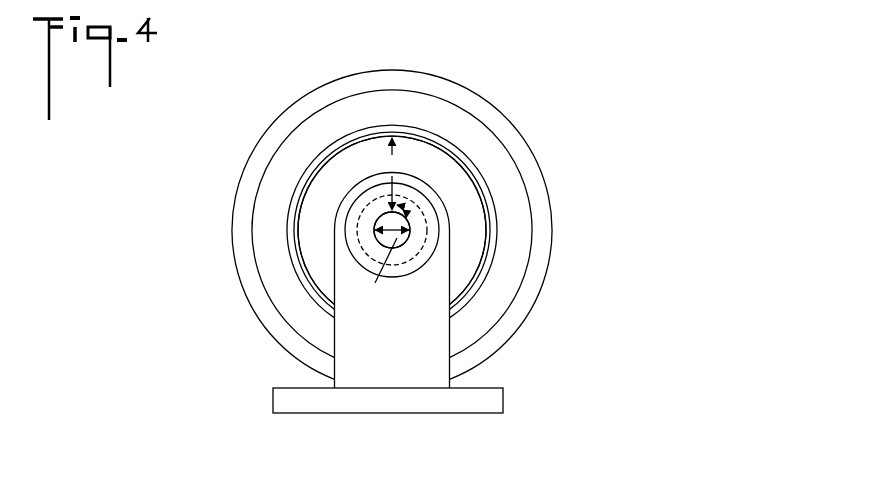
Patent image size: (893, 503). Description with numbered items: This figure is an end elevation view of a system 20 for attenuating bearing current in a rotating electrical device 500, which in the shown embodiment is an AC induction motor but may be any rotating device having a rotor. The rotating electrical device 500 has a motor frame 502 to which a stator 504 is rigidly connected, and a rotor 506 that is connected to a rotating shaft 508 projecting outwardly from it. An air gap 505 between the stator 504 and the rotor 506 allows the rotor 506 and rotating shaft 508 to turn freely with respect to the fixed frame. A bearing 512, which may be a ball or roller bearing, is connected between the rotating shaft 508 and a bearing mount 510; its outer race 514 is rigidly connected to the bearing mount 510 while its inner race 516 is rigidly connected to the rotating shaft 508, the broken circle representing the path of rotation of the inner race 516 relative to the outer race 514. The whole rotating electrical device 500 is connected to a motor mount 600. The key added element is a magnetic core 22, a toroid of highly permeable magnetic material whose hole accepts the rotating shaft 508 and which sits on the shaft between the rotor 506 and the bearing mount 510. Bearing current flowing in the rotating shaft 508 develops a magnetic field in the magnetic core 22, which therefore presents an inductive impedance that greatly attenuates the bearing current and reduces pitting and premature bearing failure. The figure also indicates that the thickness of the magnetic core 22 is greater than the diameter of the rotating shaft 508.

The system for attenuating bearing current 20 is at (546, 42).
The magnetic core 22 is at (423, 157).
The rotating electrical device 500 is at (295, 98).
The motor frame 502 is at (512, 148).
The stator 504 is at (507, 190).
The air gap 505 is at (493, 218).
The rotor 506 is at (473, 250).
The rotating shaft 508 is at (395, 237).
The bearing mount 510 is at (403, 335).
The bearing 512 is at (358, 190).
The outer race 514 is at (353, 247).
The inner race 516 is at (385, 232).
The motor mount 600 is at (390, 403).